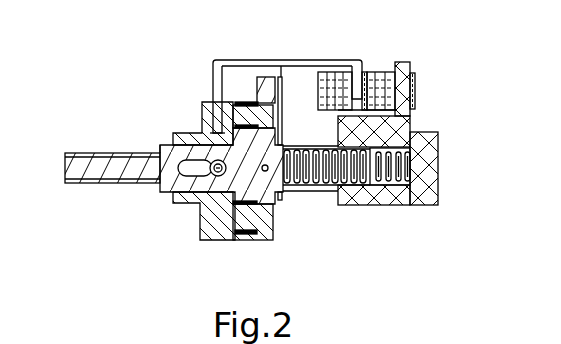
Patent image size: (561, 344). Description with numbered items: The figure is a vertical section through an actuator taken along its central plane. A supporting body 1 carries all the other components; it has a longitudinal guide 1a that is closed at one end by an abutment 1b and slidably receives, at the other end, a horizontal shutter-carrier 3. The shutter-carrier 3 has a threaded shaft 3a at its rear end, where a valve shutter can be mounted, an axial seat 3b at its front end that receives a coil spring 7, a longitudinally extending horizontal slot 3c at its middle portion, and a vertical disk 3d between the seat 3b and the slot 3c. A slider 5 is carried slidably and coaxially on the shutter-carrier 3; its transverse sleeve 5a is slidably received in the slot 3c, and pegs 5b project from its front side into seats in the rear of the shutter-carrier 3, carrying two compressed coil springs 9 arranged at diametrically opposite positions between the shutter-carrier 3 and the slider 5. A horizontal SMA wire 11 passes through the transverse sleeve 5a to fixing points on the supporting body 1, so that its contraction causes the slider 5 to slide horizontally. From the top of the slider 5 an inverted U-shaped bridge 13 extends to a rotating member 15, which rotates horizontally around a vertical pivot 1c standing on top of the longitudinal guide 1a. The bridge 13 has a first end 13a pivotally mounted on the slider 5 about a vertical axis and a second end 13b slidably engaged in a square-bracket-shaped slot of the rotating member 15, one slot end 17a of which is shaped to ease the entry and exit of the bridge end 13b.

The supporting body 1 is at (404, 146).
The longitudinal guide 1a is at (390, 135).
The abutment 1b is at (437, 170).
The vertical pivot 1c is at (402, 62).
The shutter-carrier 3 is at (299, 205).
The threaded shaft 3a is at (113, 175).
The axial seat 3b is at (319, 189).
The horizontal slot 3c is at (183, 165).
The vertical disk 3d is at (278, 96).
The slider 5 is at (214, 236).
The transverse sleeve 5a is at (205, 178).
The pegs 5b is at (268, 115).
The coil spring 7 is at (397, 186).
The compressed coil springs 9 is at (251, 101).
The SMA wire 11 is at (214, 161).
The bridge 13 is at (203, 60).
The first end 13a is at (216, 92).
The second end 13b is at (357, 70).
The rotating member 15 is at (383, 72).
The slot end 17a is at (365, 72).